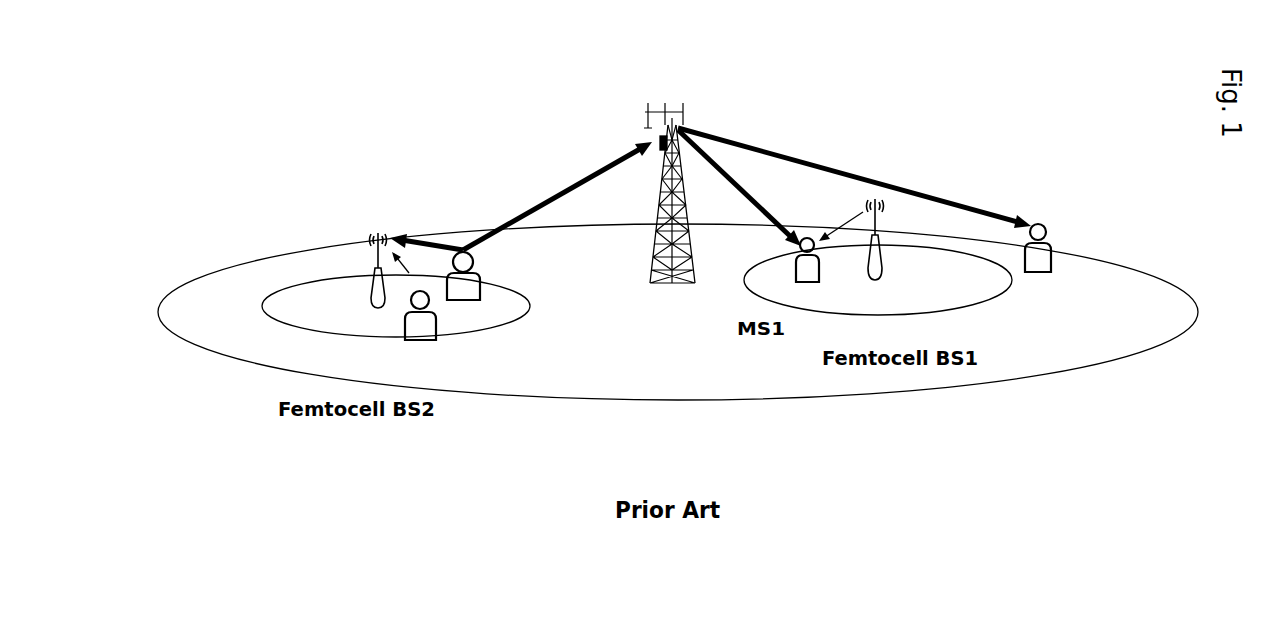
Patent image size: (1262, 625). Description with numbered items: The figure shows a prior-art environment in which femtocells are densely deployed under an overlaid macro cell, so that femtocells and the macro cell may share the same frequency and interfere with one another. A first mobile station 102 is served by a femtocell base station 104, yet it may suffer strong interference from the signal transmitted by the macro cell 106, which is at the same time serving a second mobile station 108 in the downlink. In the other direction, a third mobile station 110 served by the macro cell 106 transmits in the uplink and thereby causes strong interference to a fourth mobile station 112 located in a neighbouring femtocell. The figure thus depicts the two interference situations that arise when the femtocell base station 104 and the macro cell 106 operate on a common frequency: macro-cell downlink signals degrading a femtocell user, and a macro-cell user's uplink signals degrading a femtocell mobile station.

The first Mobile Station (MS1) 102 is at (733, 331).
The femtocell (BS1) 104 is at (912, 175).
The macro cell 106 is at (680, 128).
The second Mobile Station (MS2) 108 is at (1052, 229).
The third Mobile Station (MS3) 110 is at (545, 274).
The fourth Mobile Station (MS4) 112 is at (403, 333).